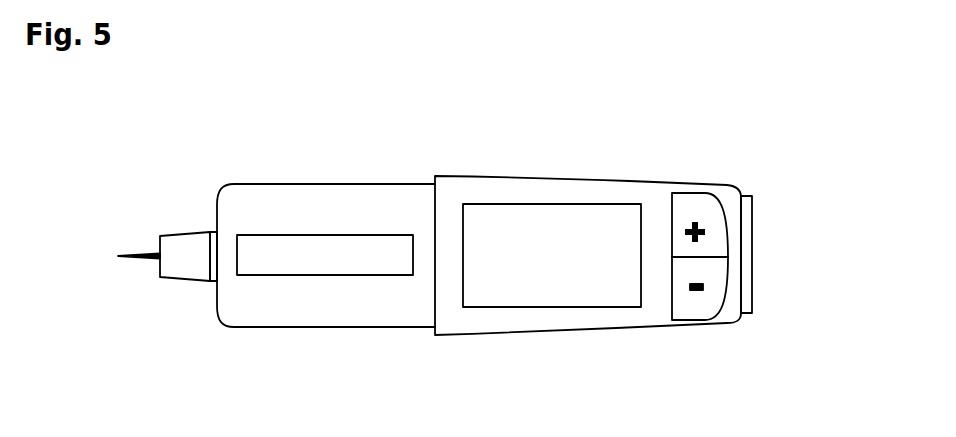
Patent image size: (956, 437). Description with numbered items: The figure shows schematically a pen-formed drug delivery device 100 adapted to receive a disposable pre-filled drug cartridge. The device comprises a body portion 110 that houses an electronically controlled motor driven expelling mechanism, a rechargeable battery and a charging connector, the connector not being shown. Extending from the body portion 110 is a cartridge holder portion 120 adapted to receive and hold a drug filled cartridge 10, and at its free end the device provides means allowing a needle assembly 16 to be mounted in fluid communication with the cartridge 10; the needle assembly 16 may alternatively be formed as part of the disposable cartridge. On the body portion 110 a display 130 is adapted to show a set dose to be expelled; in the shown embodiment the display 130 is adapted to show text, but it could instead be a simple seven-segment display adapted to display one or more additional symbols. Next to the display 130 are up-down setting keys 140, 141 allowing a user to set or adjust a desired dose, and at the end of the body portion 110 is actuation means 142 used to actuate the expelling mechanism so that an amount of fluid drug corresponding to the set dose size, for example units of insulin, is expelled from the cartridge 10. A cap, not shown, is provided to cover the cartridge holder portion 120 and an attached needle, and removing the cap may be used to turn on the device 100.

The pen-formed drug delivery device 100 is at (184, 139).
The needle assembly 16 is at (198, 270).
The drug filled cartridge 10 is at (340, 266).
The cartridge holder portion 120 is at (338, 182).
The body portion 110 is at (592, 177).
The display 130 is at (502, 292).
The up-down setting key 140 is at (702, 305).
The up-down setting key 141 is at (693, 205).
The actuation means 142 is at (752, 273).